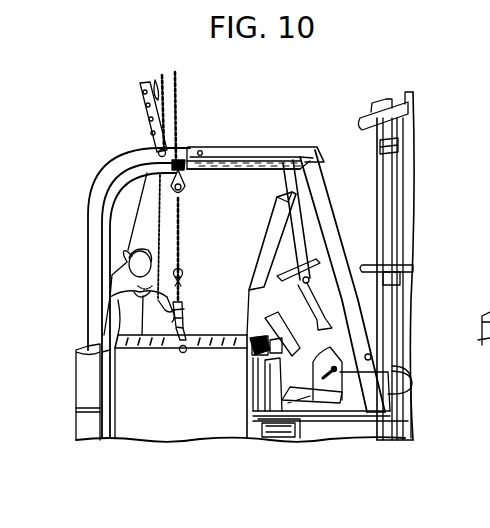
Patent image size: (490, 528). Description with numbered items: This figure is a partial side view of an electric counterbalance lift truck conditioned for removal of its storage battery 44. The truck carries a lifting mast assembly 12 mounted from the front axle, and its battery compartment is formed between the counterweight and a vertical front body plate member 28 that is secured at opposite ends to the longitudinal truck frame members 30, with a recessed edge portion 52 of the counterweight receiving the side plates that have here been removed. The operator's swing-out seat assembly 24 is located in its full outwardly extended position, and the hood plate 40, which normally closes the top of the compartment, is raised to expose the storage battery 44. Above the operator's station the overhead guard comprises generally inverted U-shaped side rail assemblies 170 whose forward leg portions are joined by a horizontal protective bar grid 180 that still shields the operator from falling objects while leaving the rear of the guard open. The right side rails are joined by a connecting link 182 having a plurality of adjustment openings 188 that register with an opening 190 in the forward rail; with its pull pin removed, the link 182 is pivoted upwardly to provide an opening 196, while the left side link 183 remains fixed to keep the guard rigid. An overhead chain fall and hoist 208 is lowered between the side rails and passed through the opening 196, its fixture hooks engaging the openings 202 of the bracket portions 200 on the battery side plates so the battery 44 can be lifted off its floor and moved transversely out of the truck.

The lifting mast assembly 12 is at (433, 133).
The operator's swing-out seat assembly 24 is at (295, 317).
The front body plate member 28 is at (244, 391).
The longitudinal truck frame members 30 is at (335, 442).
The hood plate 40 is at (262, 242).
The storage battery 44 is at (163, 405).
The recessed edge portion of the counterweight 52 is at (82, 349).
The side rail assemblies 170 is at (137, 172).
The horizontal protective bar grid 180 is at (247, 152).
The connecting link 182 is at (141, 98).
The link 183 is at (186, 172).
The adjustment openings 188 is at (149, 96).
The opening 190 is at (201, 151).
The opening 196 is at (180, 150).
The bracket portions 200 is at (188, 338).
The openings 202 is at (183, 353).
The overhead chain or cable fall means and hoist 208 is at (178, 238).